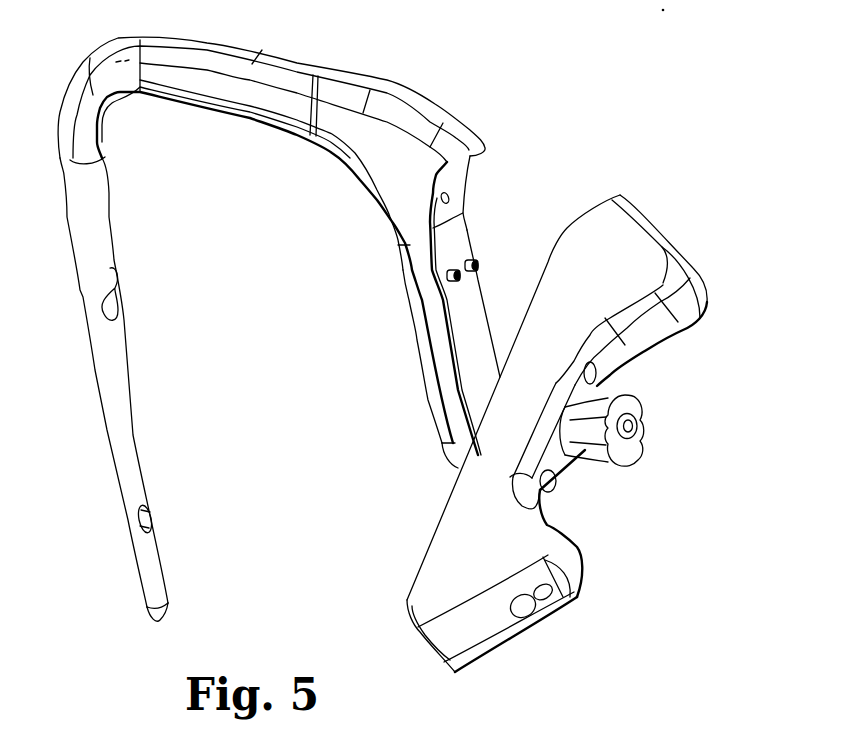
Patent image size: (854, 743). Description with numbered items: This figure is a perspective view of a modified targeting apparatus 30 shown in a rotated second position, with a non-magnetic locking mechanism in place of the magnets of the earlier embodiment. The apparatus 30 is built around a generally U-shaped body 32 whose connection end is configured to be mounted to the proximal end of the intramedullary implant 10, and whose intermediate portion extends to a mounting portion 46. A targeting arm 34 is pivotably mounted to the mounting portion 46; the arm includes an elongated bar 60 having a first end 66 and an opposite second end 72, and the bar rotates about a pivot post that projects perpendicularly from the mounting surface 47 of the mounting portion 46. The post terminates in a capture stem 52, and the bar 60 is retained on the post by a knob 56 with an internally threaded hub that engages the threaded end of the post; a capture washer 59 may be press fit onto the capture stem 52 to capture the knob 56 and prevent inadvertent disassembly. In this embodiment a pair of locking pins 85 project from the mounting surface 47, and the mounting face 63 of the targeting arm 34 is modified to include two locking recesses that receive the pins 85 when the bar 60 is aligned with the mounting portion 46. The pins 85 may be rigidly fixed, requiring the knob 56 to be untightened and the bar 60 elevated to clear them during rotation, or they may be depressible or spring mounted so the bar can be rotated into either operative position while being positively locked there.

The intramedullary implant 10 is at (137, 383).
The targeting apparatus 30 is at (356, 69).
The body 32 is at (298, 126).
The targeting arm 34 is at (514, 433).
The mounting portion 46 is at (413, 332).
The mounting surface 47 is at (460, 311).
The capture stem 52 is at (632, 430).
The knob 56 is at (632, 400).
The capture washer 59 is at (636, 425).
The elongated bar 60 is at (560, 477).
The mounting face 63 is at (428, 546).
The first end 66 is at (406, 602).
The second end 72 is at (650, 230).
The locking pins 85 is at (479, 266).